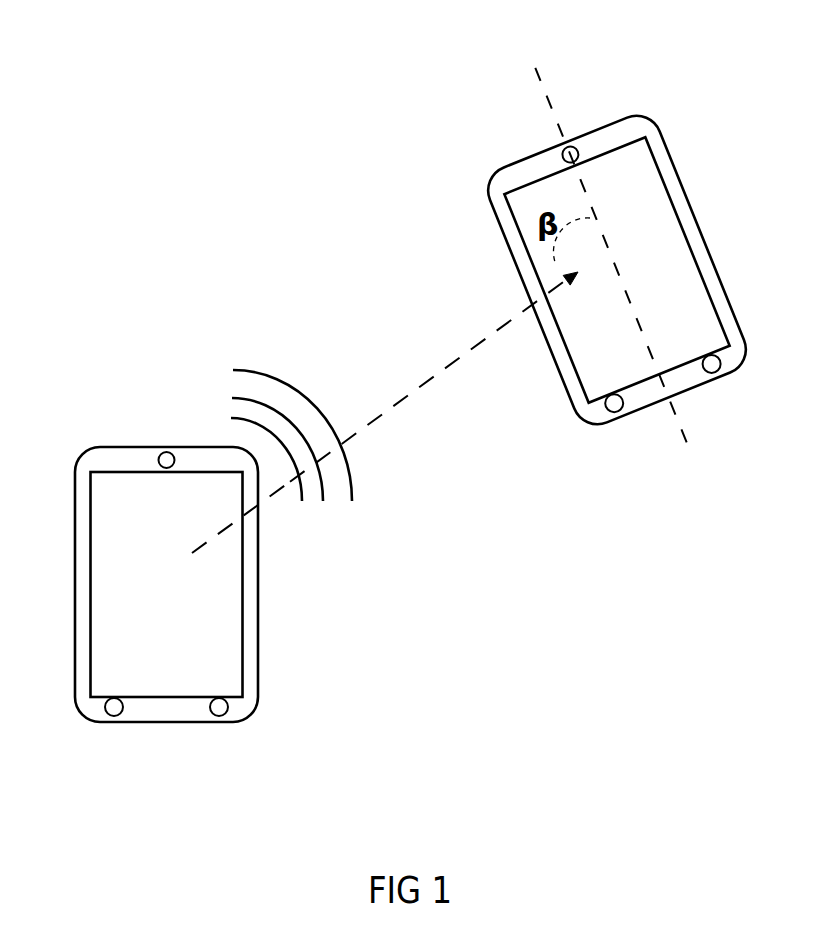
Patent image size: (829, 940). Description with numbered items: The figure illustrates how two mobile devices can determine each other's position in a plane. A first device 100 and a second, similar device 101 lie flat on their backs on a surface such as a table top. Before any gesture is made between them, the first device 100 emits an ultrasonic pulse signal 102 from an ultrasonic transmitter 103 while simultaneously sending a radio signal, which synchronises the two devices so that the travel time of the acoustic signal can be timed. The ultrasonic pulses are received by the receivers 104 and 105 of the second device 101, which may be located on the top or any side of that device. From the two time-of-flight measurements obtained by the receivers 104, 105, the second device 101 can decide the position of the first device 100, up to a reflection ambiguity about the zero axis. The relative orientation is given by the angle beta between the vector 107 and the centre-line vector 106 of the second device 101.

The first device 100 is at (80, 500).
The second device 101 is at (624, 297).
The ultrasonic pulse signal 102 is at (324, 450).
The ultrasonic transmitter 103 is at (273, 493).
The receiver 104 is at (615, 412).
The receiver 105 is at (715, 375).
The centre-line vector 106 is at (562, 110).
The vector 107 is at (432, 368).